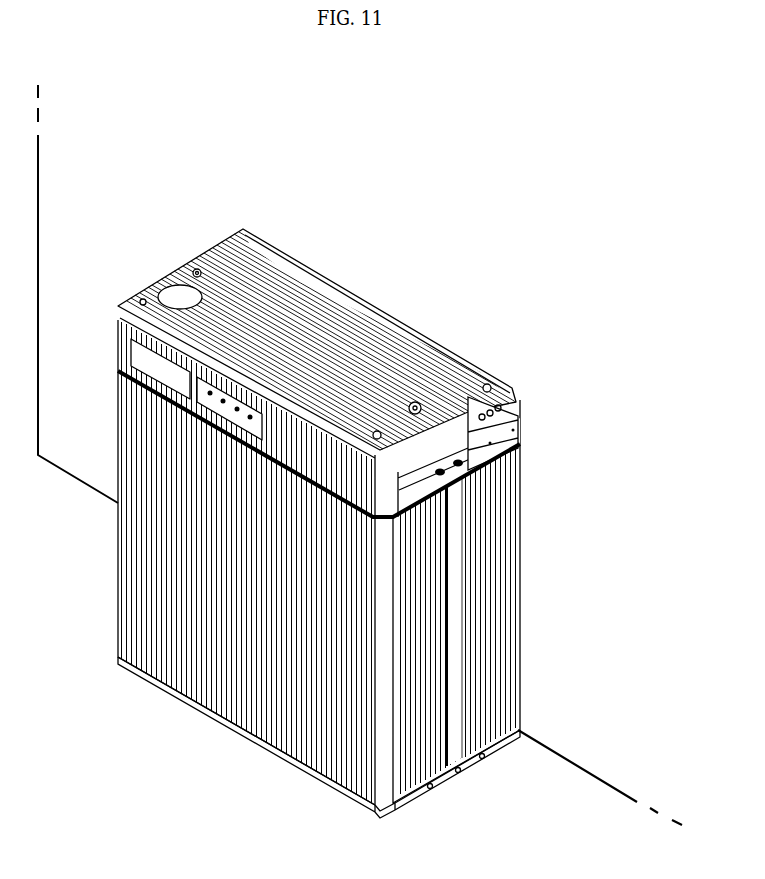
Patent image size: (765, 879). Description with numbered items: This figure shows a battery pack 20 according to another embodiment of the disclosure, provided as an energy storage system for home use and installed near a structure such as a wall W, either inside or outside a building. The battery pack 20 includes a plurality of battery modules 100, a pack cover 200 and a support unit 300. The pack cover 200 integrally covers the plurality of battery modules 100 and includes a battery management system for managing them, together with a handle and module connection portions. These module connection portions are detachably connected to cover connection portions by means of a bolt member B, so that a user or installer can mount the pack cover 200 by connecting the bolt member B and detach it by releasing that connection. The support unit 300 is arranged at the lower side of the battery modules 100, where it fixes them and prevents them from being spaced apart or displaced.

The battery pack 20 is at (448, 146).
The pack cover 200 is at (378, 288).
The battery module 100 is at (424, 788).
The support unit 300 is at (469, 778).
The bolt member B is at (442, 472).
The wall W is at (612, 767).